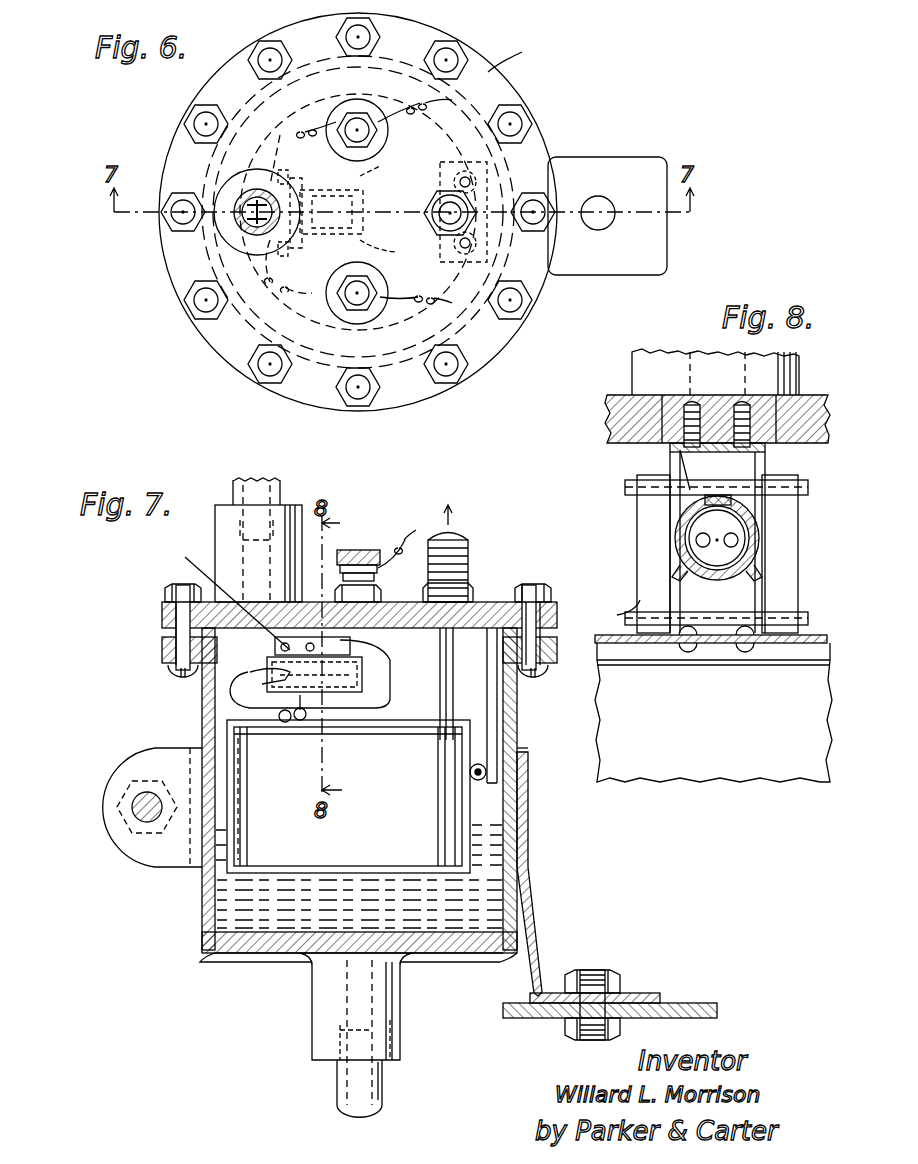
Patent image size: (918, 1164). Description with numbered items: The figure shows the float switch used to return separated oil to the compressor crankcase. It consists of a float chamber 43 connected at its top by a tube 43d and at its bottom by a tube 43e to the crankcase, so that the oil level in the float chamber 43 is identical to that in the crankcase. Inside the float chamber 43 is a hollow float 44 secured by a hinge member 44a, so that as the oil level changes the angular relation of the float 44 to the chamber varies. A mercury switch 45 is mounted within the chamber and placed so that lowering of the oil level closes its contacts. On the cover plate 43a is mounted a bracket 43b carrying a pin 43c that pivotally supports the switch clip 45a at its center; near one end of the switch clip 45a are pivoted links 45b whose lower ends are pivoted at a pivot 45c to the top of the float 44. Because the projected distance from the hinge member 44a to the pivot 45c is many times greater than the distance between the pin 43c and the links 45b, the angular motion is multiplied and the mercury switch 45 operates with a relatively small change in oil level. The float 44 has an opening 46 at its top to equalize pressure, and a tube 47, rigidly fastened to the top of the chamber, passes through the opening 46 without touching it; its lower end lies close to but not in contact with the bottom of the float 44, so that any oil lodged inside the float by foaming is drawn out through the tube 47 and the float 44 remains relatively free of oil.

In FIG. 6, the float chamber 43 is at (512, 82).
In FIG. 7, the float chamber 43 is at (201, 903).
In FIG. 6, the cover plate 43a is at (514, 49).
In FIG. 7, the cover plate 43a is at (162, 613).
In FIG. 8, the cover plate 43a is at (607, 415).
In FIG. 6, the bracket 43b is at (400, 170).
In FIG. 7, the bracket 43b is at (360, 640).
In FIG. 8, the bracket 43b is at (766, 465).
In FIG. 6, the pin 43c is at (367, 213).
In FIG. 7, the pin 43c is at (231, 595).
In FIG. 8, the pin 43c is at (672, 460).
In FIG. 6, the tube 43d is at (247, 200).
In FIG. 7, the tube 43d is at (240, 498).
In FIG. 7, the tube 43e is at (337, 1082).
In FIG. 7, the hollow float 44 is at (240, 773).
In FIG. 8, the hollow float 44 is at (620, 636).
In FIG. 7, the hinge member 44a is at (487, 772).
In FIG. 6, the mercury switch 45 is at (370, 190).
In FIG. 7, the mercury switch 45 is at (362, 680).
In FIG. 8, the mercury switch 45 is at (735, 575).
In FIG. 6, the switch clip 45a is at (445, 207).
In FIG. 7, the switch clip 45a is at (352, 660).
In FIG. 8, the switch clip 45a is at (680, 528).
In FIG. 6, the links 45b is at (302, 214).
In FIG. 7, the links 45b is at (290, 702).
In FIG. 8, the links 45b is at (640, 555).
In FIG. 7, the pivot 45c is at (284, 714).
In FIG. 8, the pivot 45c is at (615, 615).
In FIG. 7, the opening 46 is at (430, 722).
In FIG. 6, the tube 47 is at (435, 226).
In FIG. 7, the tube 47 is at (452, 682).